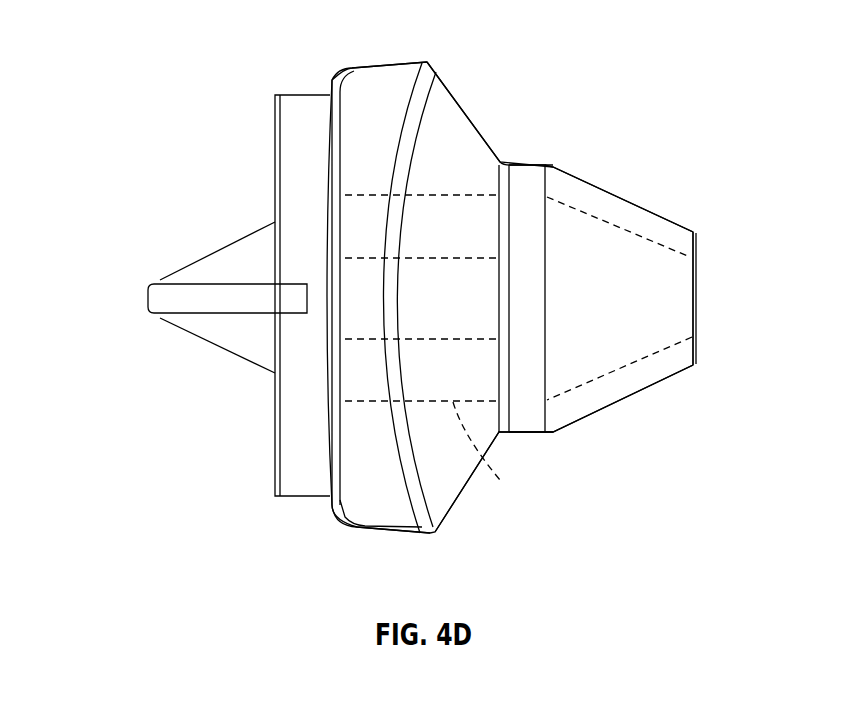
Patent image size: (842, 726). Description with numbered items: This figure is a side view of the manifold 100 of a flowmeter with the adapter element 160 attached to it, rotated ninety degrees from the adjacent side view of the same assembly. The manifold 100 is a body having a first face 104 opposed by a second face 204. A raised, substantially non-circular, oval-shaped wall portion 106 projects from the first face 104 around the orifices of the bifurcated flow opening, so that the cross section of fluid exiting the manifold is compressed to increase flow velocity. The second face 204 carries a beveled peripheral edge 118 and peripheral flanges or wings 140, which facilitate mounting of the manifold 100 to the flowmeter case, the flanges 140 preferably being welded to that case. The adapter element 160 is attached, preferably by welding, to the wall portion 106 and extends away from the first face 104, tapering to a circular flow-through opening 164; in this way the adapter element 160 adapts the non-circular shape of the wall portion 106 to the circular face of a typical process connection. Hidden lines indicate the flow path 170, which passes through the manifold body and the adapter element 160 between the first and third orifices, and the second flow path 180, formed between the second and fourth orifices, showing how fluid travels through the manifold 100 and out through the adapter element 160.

The manifold 100 is at (140, 47).
The first face 104 is at (440, 503).
The wall portion 106 is at (526, 172).
The beveled peripheral edge 118 is at (330, 94).
The peripheral flanges 140 is at (200, 338).
The adapter element 160 is at (660, 212).
The flow-through opening 164 is at (697, 297).
The flow path 170 is at (423, 203).
The second flow path 180 is at (487, 459).
The second face 204 is at (273, 185).